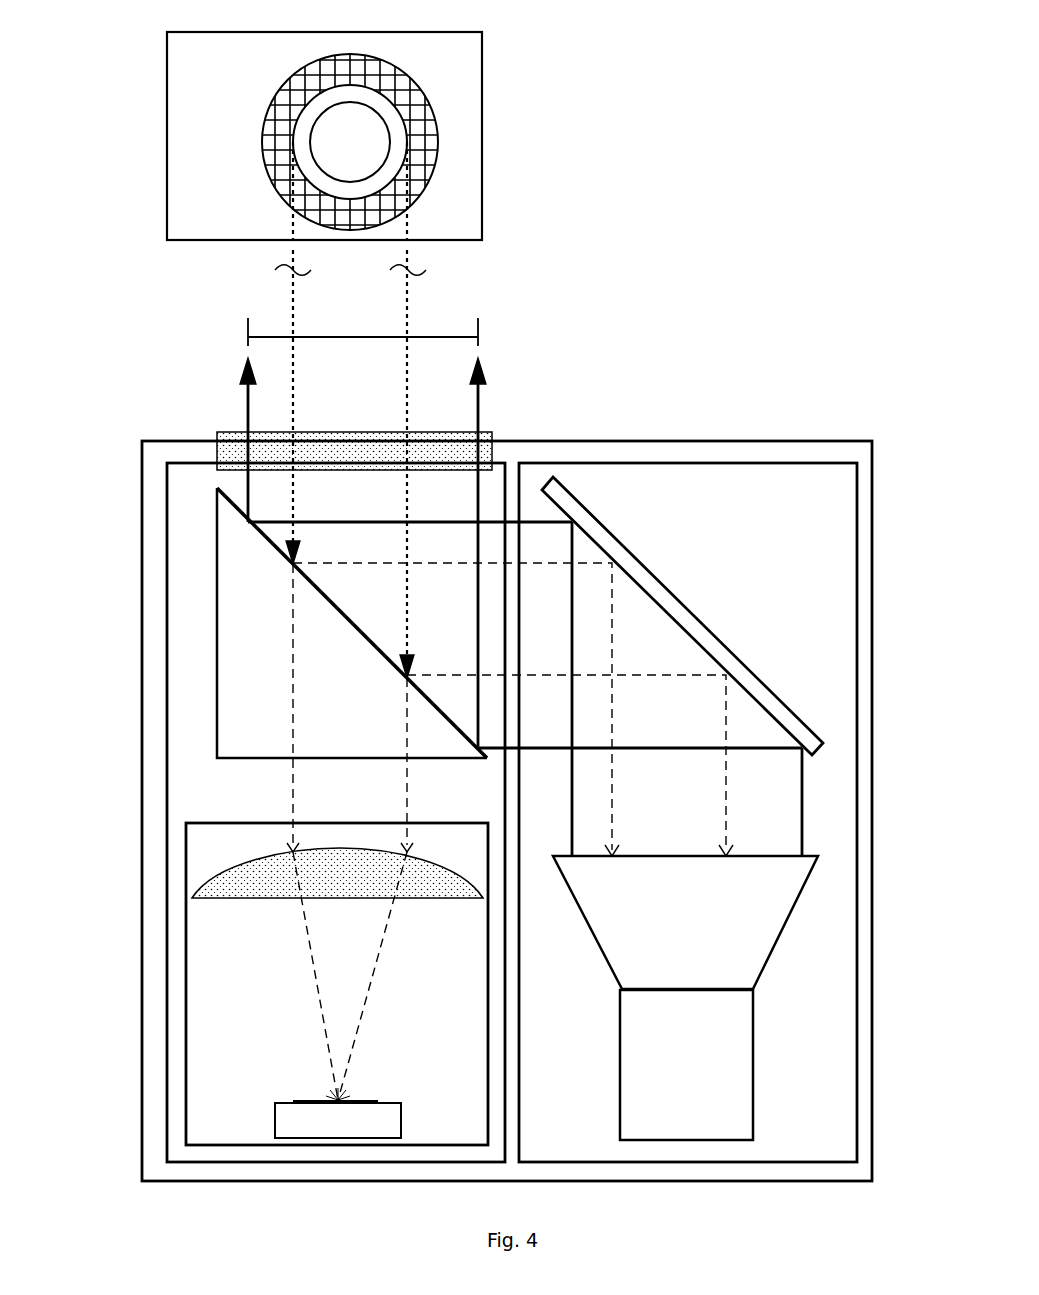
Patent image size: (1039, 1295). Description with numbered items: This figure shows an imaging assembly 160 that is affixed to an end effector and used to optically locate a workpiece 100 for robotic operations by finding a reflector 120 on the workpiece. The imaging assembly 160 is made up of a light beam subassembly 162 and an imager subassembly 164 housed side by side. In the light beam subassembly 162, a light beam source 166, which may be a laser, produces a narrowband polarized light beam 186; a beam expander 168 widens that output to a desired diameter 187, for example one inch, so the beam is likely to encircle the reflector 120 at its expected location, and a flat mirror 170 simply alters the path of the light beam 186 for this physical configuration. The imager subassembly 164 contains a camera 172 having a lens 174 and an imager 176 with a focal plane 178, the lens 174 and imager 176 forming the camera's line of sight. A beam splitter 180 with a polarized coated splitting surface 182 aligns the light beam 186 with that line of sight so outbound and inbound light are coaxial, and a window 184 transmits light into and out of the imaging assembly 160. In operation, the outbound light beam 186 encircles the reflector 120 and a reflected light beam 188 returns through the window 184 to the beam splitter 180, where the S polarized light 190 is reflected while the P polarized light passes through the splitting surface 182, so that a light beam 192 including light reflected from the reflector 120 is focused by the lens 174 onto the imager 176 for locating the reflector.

The workpiece 100 is at (163, 166).
The reflector 120 is at (438, 140).
The imaging assembly 160 is at (692, 440).
The light beam subassembly 162 is at (788, 458).
The imager subassembly 164 is at (167, 713).
The light beam source 166 is at (753, 1027).
The beam expander 168 is at (805, 890).
The flat mirror 170 is at (618, 535).
The camera 172 is at (257, 822).
The lens 174 is at (417, 900).
The imager 176 is at (402, 1117).
The focal plane 178 is at (363, 1102).
The beam splitter 180 is at (217, 643).
The splitting surface 182 is at (277, 552).
The window 184 is at (487, 430).
The light beam 186 is at (248, 412).
The desired diameter 187 is at (445, 330).
The reflected light beam 188 is at (407, 405).
The S polarized light 190 is at (726, 813).
The light beam 192 is at (408, 810).